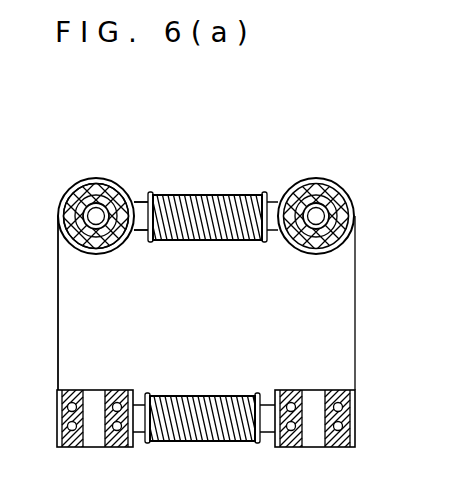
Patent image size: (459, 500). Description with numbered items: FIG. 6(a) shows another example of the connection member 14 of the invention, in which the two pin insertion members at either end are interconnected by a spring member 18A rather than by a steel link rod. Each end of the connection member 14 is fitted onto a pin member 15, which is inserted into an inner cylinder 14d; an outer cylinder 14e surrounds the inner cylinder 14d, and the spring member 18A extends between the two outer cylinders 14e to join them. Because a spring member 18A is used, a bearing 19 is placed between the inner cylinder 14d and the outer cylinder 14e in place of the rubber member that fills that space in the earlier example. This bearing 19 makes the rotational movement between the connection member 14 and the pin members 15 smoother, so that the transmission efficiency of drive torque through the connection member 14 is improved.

The first connection member 14 is at (224, 175).
The inner cylinder 14d is at (108, 180).
The outer cylinder 14e is at (110, 253).
The pin member 15 is at (84, 176).
The spring member 18A is at (211, 218).
The bearing 19 is at (130, 180).